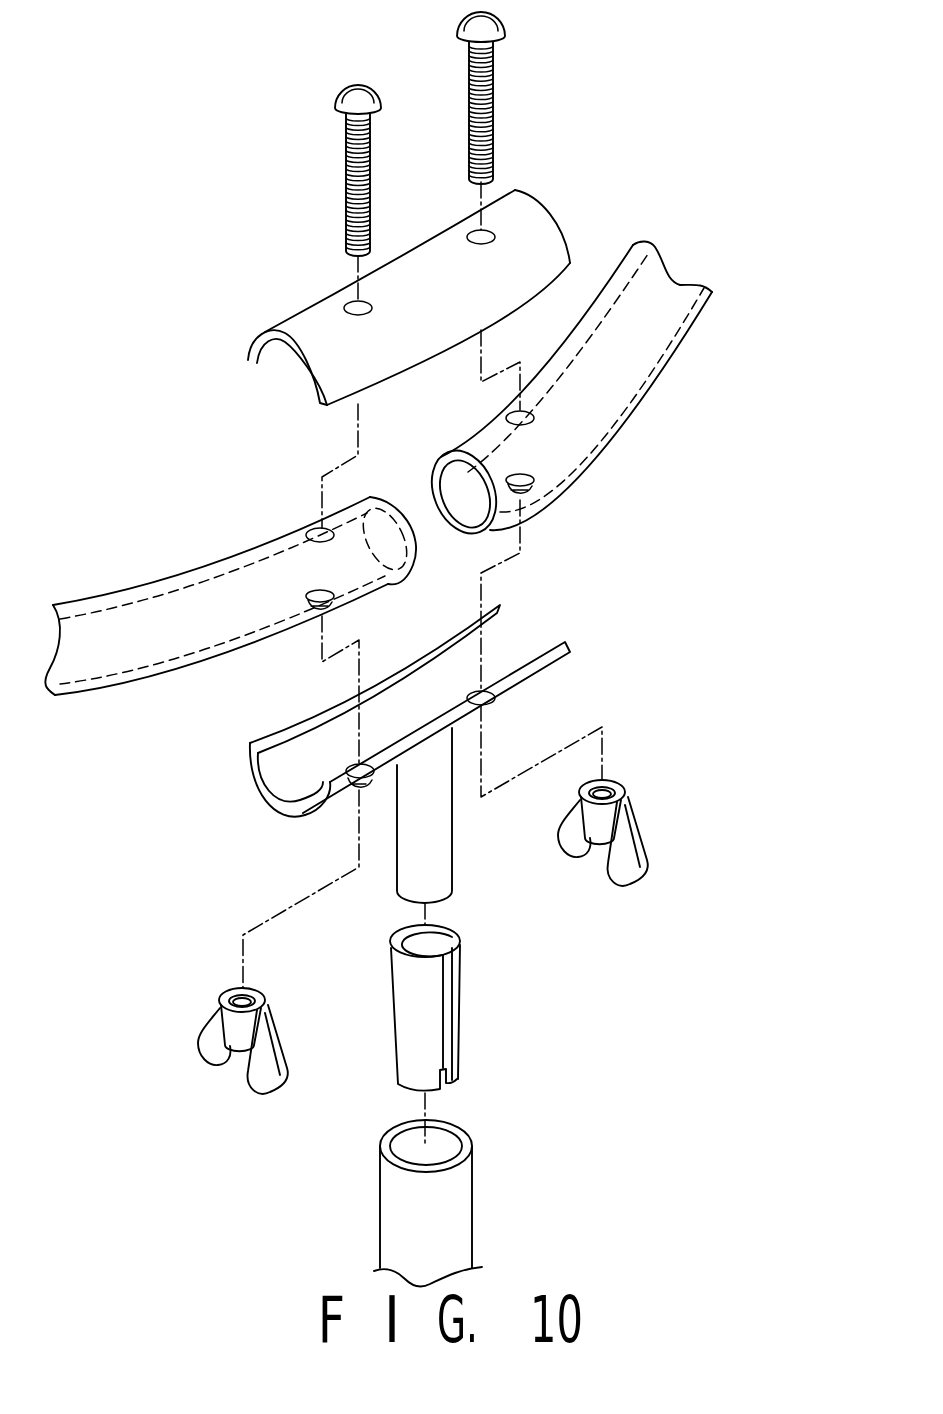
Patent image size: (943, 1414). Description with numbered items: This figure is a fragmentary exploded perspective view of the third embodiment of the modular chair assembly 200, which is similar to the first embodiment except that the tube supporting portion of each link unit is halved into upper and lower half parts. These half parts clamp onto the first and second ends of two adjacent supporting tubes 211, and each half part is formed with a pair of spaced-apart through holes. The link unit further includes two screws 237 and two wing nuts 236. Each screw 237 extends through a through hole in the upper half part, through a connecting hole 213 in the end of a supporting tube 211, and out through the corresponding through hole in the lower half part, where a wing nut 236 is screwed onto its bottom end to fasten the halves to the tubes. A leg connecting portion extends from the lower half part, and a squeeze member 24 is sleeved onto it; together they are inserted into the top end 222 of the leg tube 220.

The modular chair assembly 200 is at (768, 167).
The supporting tube 211 is at (633, 377).
The connecting hole 213 is at (543, 421).
The leg tube 220 is at (465, 1235).
The top end 222 is at (420, 1155).
The wing nut 236 is at (647, 870).
The screw 237 is at (468, 87).
The squeeze member 24 is at (432, 1052).